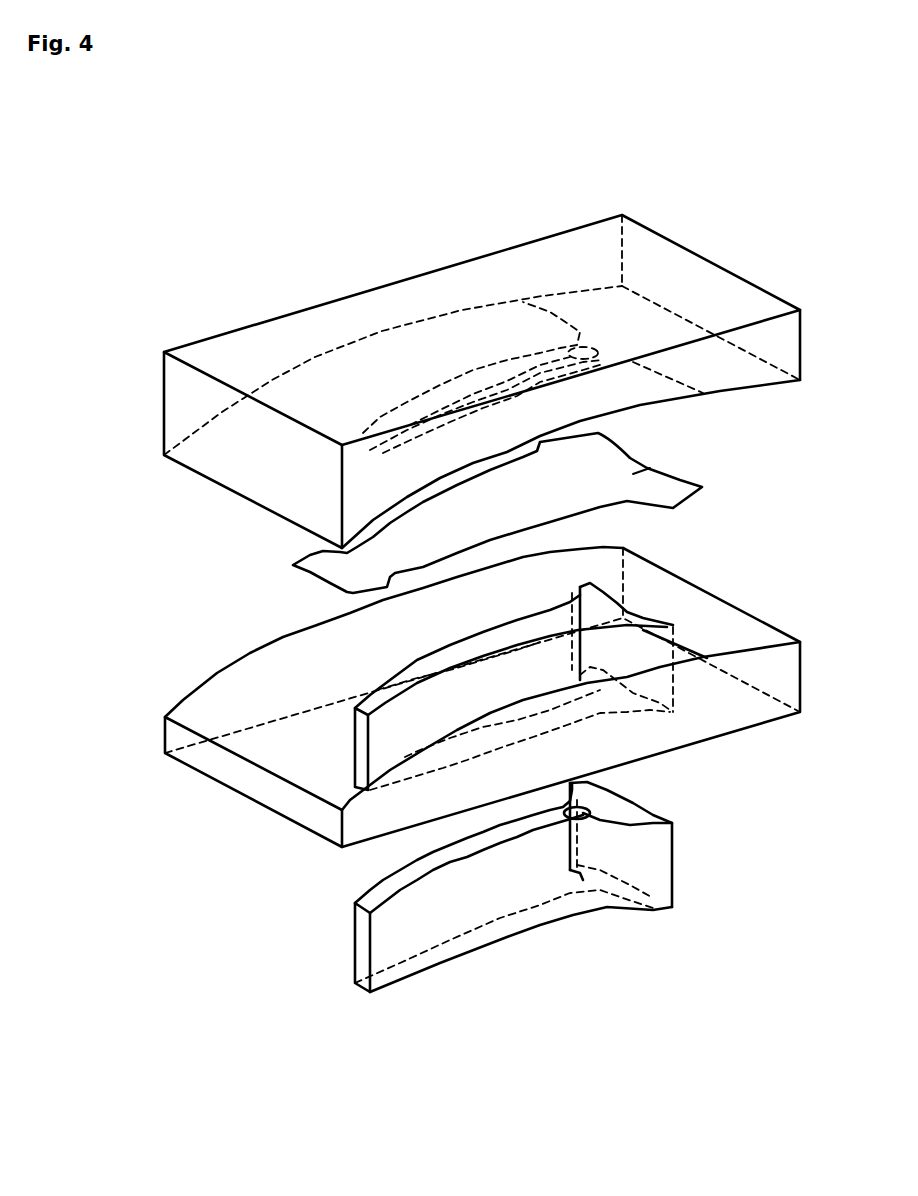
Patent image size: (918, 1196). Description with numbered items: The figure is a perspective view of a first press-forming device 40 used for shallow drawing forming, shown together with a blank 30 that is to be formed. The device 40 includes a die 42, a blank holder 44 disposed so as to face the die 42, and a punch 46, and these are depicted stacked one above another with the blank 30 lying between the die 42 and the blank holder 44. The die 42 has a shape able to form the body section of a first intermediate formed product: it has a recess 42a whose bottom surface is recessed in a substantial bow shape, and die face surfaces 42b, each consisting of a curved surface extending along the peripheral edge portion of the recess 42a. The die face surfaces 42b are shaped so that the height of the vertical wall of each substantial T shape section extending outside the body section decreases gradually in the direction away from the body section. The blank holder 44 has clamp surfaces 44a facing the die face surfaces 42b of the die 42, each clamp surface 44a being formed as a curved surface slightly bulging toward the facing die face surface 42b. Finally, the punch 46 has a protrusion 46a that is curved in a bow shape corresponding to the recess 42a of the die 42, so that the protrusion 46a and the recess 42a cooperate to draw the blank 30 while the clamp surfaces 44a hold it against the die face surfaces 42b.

The first press-forming device 40 is at (636, 188).
The die 42 is at (727, 221).
The recess 42a is at (533, 327).
The die face surfaces 42b is at (360, 283).
The blank 30 is at (650, 468).
The blank holder 44 is at (722, 566).
The clamp surfaces 44a is at (507, 668).
The punch 46 is at (710, 807).
The protrusion 46a is at (457, 847).